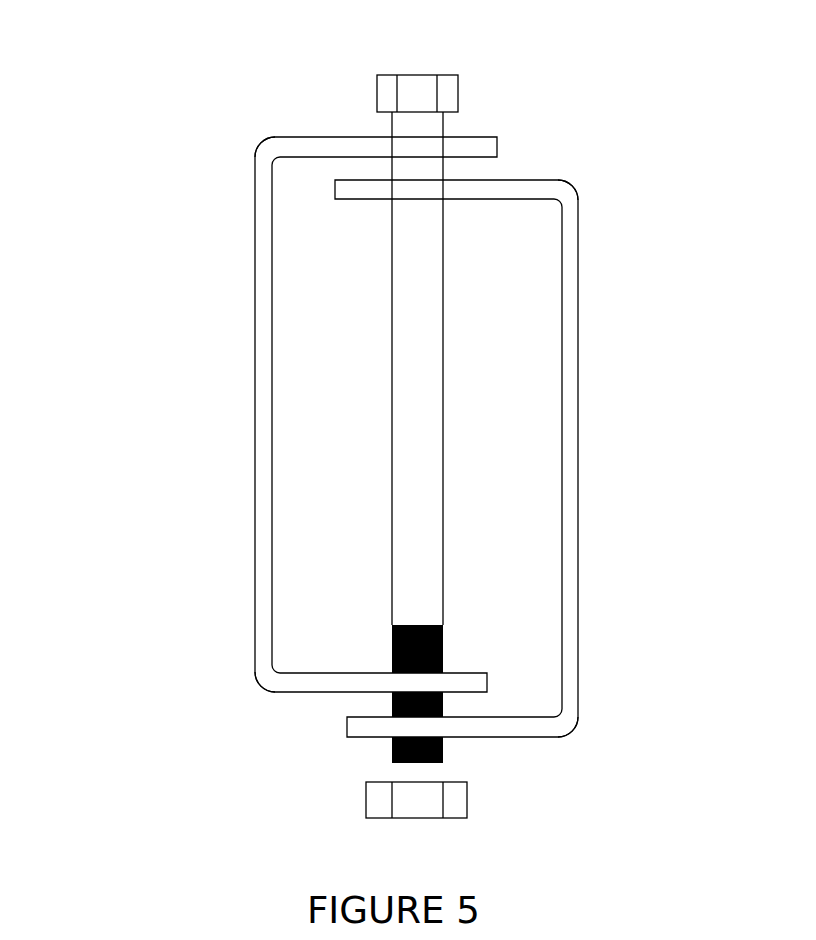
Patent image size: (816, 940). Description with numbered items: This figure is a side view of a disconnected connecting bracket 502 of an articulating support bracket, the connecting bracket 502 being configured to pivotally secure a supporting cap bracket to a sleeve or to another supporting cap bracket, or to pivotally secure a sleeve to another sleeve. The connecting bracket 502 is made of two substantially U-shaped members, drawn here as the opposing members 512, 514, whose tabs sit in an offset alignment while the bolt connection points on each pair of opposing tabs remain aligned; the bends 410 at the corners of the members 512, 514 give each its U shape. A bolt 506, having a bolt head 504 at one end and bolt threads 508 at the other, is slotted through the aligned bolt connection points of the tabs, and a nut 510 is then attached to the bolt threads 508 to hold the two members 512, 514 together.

The connecting bracket 502 is at (172, 25).
The bolt head 504 is at (377, 92).
The bolt 506 is at (420, 404).
The bolt threads 508 is at (391, 642).
The nut 510 is at (366, 786).
The first C-shaped bracket 512 is at (255, 442).
The second C-shaped bracket 514 is at (575, 448).
The bend 410 is at (256, 164).